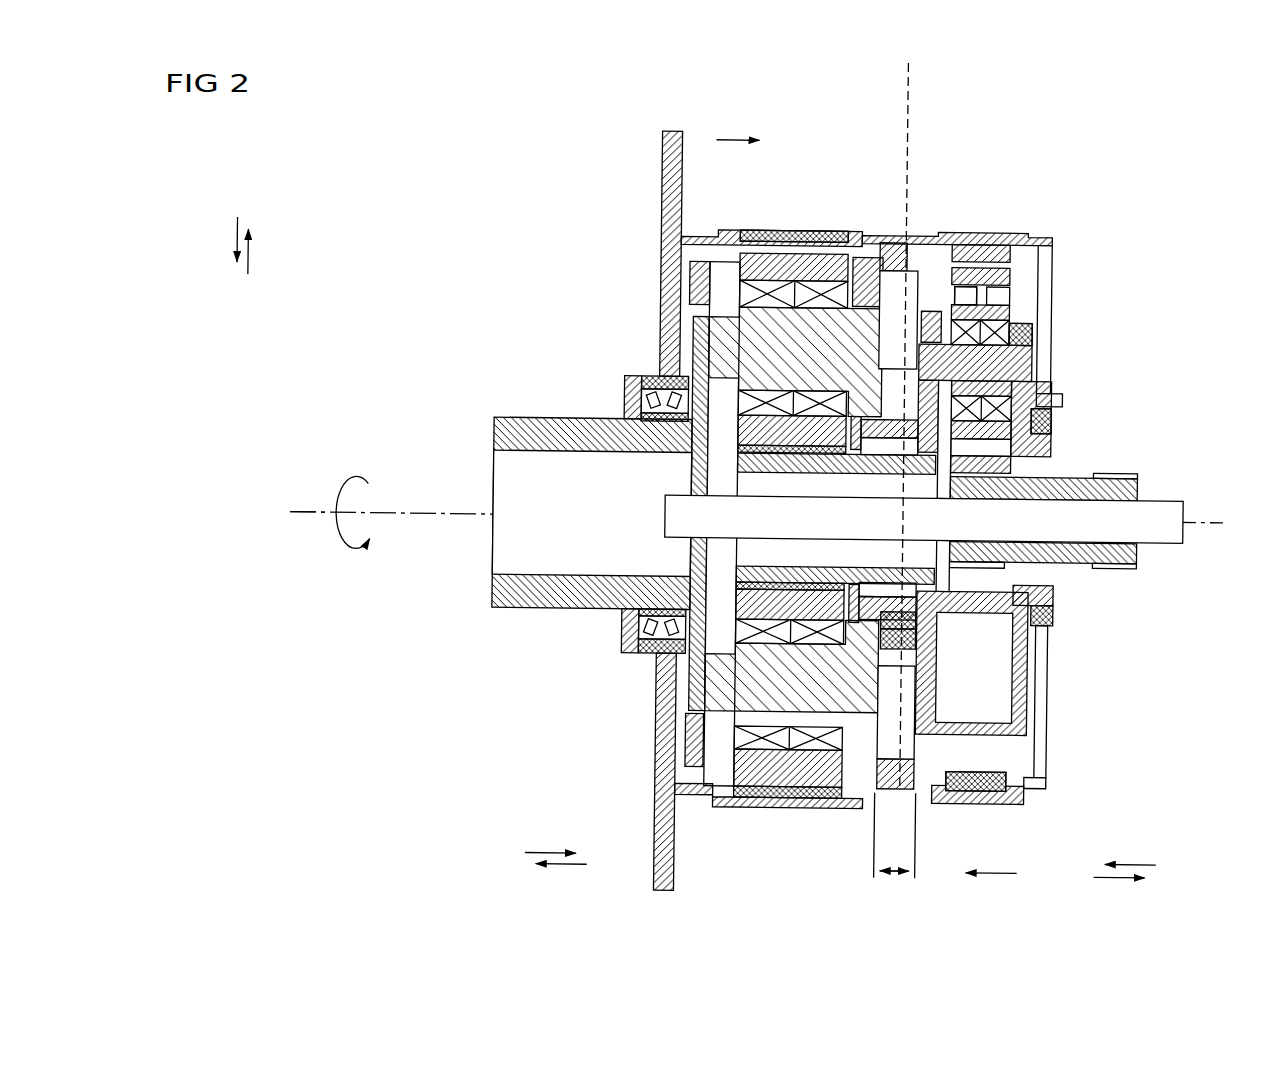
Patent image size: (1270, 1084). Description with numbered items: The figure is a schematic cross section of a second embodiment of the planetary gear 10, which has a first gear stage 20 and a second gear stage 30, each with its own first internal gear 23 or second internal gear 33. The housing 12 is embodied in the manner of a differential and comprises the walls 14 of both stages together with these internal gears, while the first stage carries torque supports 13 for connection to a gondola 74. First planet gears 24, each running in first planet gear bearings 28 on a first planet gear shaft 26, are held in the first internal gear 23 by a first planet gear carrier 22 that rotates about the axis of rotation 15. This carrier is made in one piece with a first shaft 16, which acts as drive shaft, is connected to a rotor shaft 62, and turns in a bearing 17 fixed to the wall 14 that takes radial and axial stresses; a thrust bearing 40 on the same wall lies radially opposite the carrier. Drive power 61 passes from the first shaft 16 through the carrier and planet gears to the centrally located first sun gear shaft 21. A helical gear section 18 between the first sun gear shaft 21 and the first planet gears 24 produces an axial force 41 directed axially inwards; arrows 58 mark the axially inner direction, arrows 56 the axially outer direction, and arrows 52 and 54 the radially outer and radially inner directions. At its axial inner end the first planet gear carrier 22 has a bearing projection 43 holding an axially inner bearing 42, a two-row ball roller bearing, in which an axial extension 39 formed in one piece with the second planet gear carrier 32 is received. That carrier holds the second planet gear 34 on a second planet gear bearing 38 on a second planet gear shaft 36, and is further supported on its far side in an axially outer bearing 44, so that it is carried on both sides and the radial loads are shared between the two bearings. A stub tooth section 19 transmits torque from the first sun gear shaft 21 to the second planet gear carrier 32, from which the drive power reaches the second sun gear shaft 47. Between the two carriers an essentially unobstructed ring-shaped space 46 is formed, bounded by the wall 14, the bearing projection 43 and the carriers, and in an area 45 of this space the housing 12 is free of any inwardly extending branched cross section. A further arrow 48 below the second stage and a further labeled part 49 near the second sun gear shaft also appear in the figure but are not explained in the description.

The planetary gear 10 is at (385, 128).
The housing 12 is at (726, 232).
The torque supports 13 is at (668, 192).
The wall 14 is at (1042, 250).
The axis of rotation 15 is at (1212, 518).
The first shaft 16 is at (530, 425).
The bearing 17 is at (630, 395).
The helical gear section 18 is at (765, 470).
The stub tooth section 19 is at (1125, 473).
The first gear stage 20 is at (835, 140).
The first sun gear shaft 21 is at (745, 490).
The first planet gear carrier 22 is at (692, 745).
The first internal gear 23 is at (820, 240).
The first planet gears 24 is at (780, 772).
The first planet gear shaft 26 is at (727, 342).
The first planet gear bearings 28 is at (745, 292).
The second gear stage 30 is at (1006, 140).
The second planet gear carrier 32 is at (930, 318).
The second internal gear 33 is at (985, 270).
The second planet gear 34 is at (1000, 302).
The second planet gear shaft 36 is at (1012, 362).
The second planet gear bearing 38 is at (1015, 332).
The axial extension 39 is at (1040, 615).
The thrust bearing 40 is at (895, 835).
The axial force 41 is at (727, 140).
The axially inner bearing 42 is at (888, 248).
The bearing projection 43 is at (1010, 650).
The axially outer bearing 44 is at (1045, 416).
The area 45 is at (900, 878).
The ring-shaped space 46 is at (900, 300).
The second sun gear shaft 47 is at (1130, 552).
The actuating direction 48 is at (1002, 876).
The ring 49 is at (1008, 463).
The radially outer direction 52 is at (248, 266).
The radially inner direction 54 is at (232, 249).
The axially outer direction 56 is at (566, 870).
The axially inner direction 58 is at (550, 855).
The drive power 61 is at (370, 488).
The rotor shaft 62 is at (290, 443).
The gondola 74 is at (173, 527).